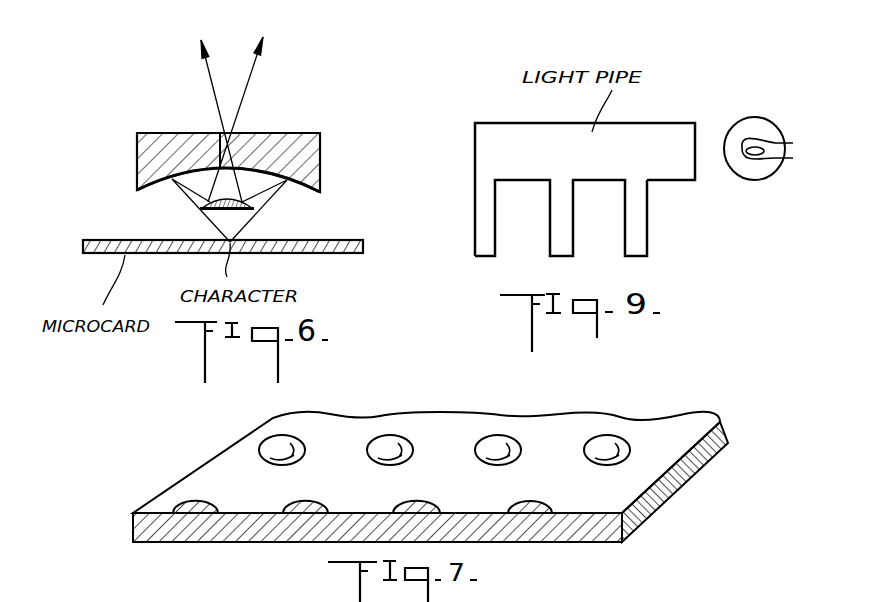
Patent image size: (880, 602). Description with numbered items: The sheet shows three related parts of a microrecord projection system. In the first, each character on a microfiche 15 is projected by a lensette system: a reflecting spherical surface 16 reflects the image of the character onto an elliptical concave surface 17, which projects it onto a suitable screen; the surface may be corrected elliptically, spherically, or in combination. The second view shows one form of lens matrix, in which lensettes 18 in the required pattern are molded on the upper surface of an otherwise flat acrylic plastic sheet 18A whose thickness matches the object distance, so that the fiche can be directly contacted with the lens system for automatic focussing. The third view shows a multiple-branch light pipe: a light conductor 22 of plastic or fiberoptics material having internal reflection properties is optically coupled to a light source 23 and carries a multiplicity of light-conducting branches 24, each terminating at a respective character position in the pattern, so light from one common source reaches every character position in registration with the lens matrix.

In FIG. 6, the microfiche 15 is at (330, 242).
In FIG. 6, the reflecting spherical surface 16 is at (249, 204).
In FIG. 6, the elliptical concave surface 17 is at (317, 157).
In FIG. 7, the lensettes 18 is at (588, 442).
In FIG. 7, the acrylic plastic sheet 18A is at (488, 413).
In FIG. 9, the light conductor 22 is at (693, 125).
In FIG. 9, the light source 23 is at (767, 128).
In FIG. 9, the light-conducting branches 24 is at (557, 238).